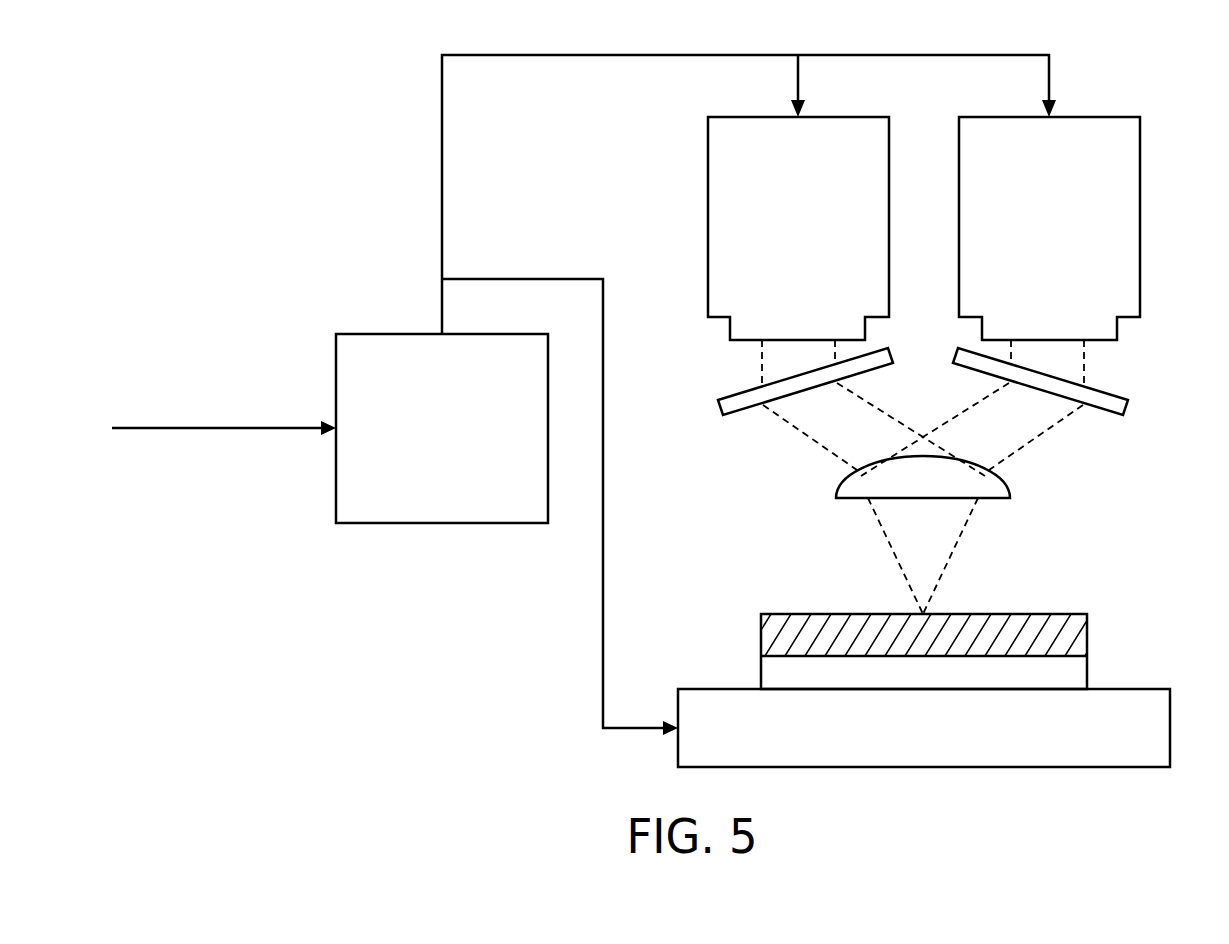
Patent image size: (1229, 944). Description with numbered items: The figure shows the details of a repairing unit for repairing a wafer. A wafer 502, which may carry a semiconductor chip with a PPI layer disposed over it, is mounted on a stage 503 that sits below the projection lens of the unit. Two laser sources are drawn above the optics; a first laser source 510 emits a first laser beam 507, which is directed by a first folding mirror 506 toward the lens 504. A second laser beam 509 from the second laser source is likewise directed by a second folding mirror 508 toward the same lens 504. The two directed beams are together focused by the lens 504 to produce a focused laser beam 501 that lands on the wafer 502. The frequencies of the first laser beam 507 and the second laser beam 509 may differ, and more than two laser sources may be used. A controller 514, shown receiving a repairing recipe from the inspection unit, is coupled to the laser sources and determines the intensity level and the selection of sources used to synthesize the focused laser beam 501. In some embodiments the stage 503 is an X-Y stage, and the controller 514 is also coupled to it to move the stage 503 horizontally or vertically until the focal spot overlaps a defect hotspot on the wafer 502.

The focused laser beam 501 is at (947, 545).
The wafer 502 is at (1097, 614).
The stage 503 is at (903, 745).
The lens 504 is at (1002, 488).
The first folding mirror 506 is at (722, 406).
The first laser beam 507 is at (770, 362).
The second folding mirror 508 is at (1125, 405).
The second laser beam 509 is at (1075, 362).
The first laser source 510 is at (778, 233).
The controller 514 is at (422, 446).